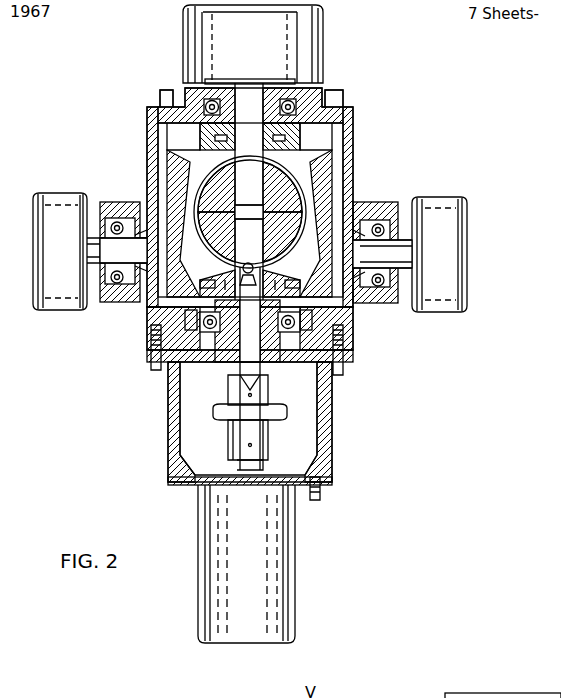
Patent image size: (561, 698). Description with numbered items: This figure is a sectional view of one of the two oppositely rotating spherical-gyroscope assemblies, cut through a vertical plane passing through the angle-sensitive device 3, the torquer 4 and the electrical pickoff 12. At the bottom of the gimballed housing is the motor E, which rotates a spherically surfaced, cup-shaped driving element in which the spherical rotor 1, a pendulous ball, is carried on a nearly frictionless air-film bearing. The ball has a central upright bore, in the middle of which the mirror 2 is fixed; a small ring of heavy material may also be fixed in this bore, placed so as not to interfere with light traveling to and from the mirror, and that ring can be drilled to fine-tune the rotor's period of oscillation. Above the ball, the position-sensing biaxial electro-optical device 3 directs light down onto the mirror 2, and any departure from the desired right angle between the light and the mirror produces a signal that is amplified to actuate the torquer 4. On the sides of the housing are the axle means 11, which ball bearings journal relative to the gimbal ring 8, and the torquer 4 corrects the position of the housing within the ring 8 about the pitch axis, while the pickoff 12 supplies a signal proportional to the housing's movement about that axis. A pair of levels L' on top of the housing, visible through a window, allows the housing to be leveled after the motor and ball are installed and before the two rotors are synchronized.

The spherical rotor 1 is at (290, 217).
The mirror 2 is at (248, 205).
The angle-sensitive device 3 is at (264, 57).
The torquer 4 is at (450, 266).
The gimbal ring 8 is at (380, 200).
The axle means 11 is at (92, 265).
The electrical pickoff 12 is at (70, 262).
The motor E is at (252, 573).
The level L' is at (244, 82).